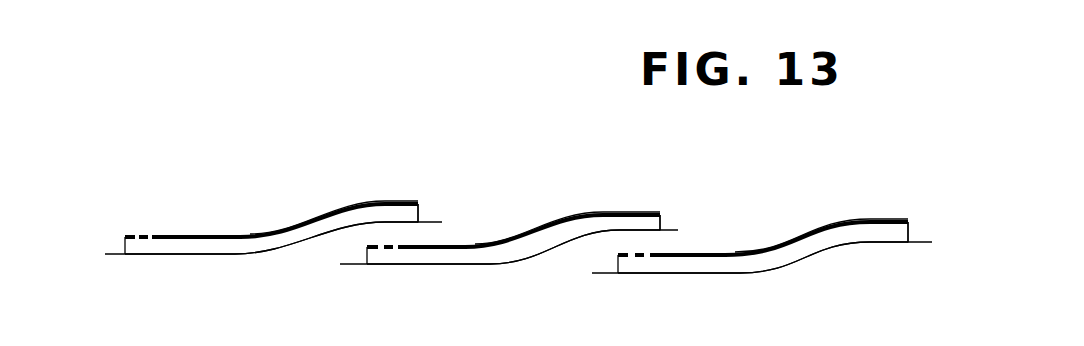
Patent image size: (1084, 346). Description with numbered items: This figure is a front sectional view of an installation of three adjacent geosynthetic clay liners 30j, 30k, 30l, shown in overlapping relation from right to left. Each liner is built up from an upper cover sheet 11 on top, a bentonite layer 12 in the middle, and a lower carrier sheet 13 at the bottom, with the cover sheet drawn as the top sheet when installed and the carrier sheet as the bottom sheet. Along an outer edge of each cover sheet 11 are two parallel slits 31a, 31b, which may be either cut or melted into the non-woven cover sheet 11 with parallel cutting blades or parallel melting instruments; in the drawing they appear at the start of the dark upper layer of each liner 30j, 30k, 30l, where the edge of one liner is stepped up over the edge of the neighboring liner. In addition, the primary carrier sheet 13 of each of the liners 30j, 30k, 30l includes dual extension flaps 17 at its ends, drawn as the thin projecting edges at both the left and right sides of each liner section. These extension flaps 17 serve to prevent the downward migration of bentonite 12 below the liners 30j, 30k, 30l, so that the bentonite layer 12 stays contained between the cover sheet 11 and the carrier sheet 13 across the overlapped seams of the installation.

The cover sheet 11 is at (266, 219).
The bentonite layer 12 is at (386, 212).
The carrier sheet 13 is at (223, 266).
The extension flaps 17 is at (108, 254).
The geosynthetic clay liner 30l is at (322, 176).
The geosynthetic clay liner 30k is at (507, 173).
The geosynthetic clay liner 30j is at (780, 193).
The slit 31a is at (133, 235).
The slit 31b is at (706, 233).